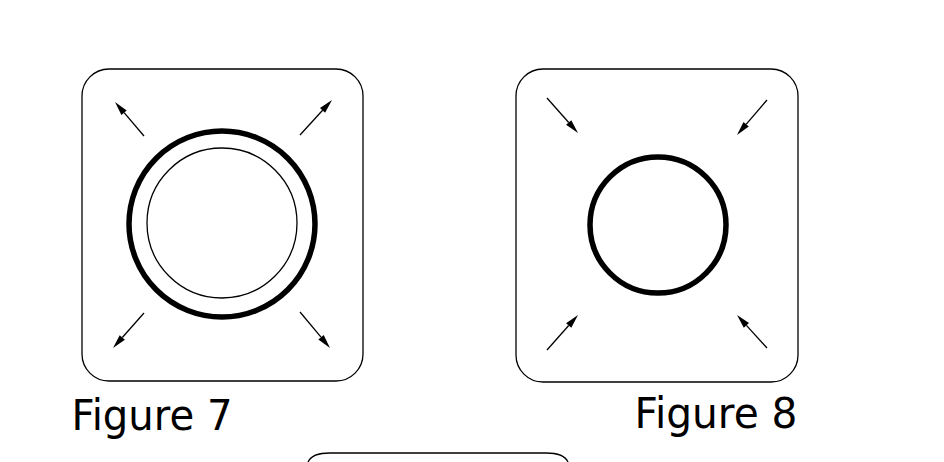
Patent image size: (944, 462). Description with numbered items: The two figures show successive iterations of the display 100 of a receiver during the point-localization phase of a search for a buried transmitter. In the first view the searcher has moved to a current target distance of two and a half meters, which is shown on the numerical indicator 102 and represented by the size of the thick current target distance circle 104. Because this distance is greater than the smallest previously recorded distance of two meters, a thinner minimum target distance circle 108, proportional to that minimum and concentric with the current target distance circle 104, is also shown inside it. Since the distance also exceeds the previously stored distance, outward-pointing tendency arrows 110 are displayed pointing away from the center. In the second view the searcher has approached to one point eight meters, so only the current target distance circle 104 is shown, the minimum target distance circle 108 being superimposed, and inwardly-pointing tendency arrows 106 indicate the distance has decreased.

In FIG. 7, the display 100 is at (377, 121).
In FIG. 8, the display 100 is at (812, 123).
In FIG. 7, the numerical indicator 102 is at (243, 218).
In FIG. 8, the numerical indicator 102 is at (682, 215).
In FIG. 7, the current target distance circle 104 is at (310, 257).
In FIG. 8, the current target distance circle 104 is at (720, 250).
In FIG. 8, the inwardly-pointing tendency arrows 106 is at (753, 338).
In FIG. 7, the minimum target distance circle 108 is at (297, 222).
In FIG. 7, the outward-pointing tendency arrows 110 is at (328, 103).